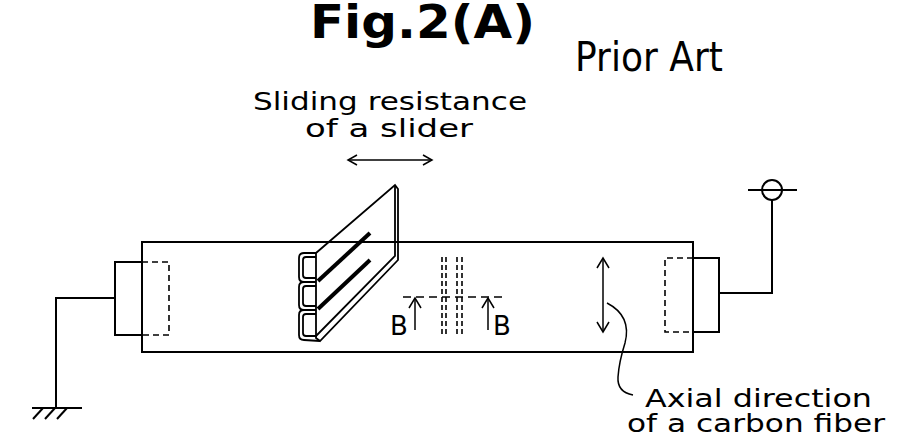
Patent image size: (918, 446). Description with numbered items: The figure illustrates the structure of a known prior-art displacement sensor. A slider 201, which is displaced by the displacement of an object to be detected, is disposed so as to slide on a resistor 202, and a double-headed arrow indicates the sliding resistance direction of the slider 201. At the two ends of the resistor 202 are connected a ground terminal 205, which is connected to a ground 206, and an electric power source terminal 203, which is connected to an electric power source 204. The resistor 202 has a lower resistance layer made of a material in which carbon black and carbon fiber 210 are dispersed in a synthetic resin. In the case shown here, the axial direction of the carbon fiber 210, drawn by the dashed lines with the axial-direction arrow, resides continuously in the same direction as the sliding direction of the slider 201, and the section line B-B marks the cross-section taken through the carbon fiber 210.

The slider 201 is at (378, 201).
The resistor 202 is at (228, 342).
The electric power source terminal 203 is at (712, 322).
The electric power source 204 is at (772, 180).
The ground terminal 205 is at (115, 273).
The ground 206 is at (70, 410).
The carbon fiber 210 is at (460, 257).